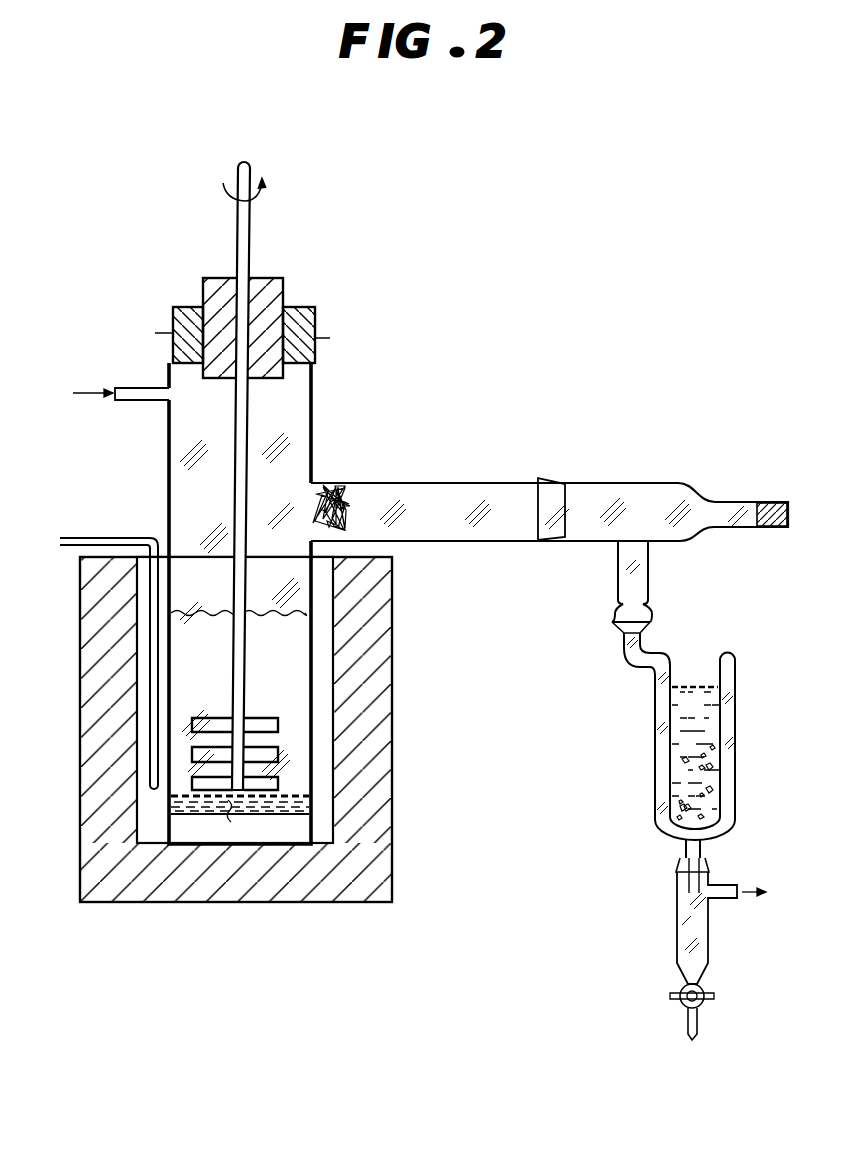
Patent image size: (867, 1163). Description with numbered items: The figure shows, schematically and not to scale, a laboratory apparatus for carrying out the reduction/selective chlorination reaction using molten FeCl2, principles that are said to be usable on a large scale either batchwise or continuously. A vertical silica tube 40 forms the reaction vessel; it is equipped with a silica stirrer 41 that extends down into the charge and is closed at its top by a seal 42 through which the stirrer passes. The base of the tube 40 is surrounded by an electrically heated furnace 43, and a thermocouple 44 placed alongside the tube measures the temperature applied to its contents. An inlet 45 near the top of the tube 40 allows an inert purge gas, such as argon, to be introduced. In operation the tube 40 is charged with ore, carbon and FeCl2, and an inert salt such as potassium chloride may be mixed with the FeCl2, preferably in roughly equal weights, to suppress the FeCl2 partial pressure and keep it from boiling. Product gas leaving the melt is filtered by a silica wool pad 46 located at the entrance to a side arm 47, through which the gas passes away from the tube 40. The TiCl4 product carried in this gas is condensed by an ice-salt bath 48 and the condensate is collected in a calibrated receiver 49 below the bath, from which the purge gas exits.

The vertical silica tube 40 is at (316, 404).
The silica stirrer 41 is at (243, 425).
The seal 42 is at (276, 302).
The electrically heated furnace 43 is at (378, 735).
The thermocouple 44 is at (122, 537).
The inlet 45 is at (130, 400).
The silica wool pad 46 is at (325, 483).
The arm 47 is at (512, 483).
The ice-salt bath 48 is at (736, 735).
The calibrated receiver 49 is at (709, 935).